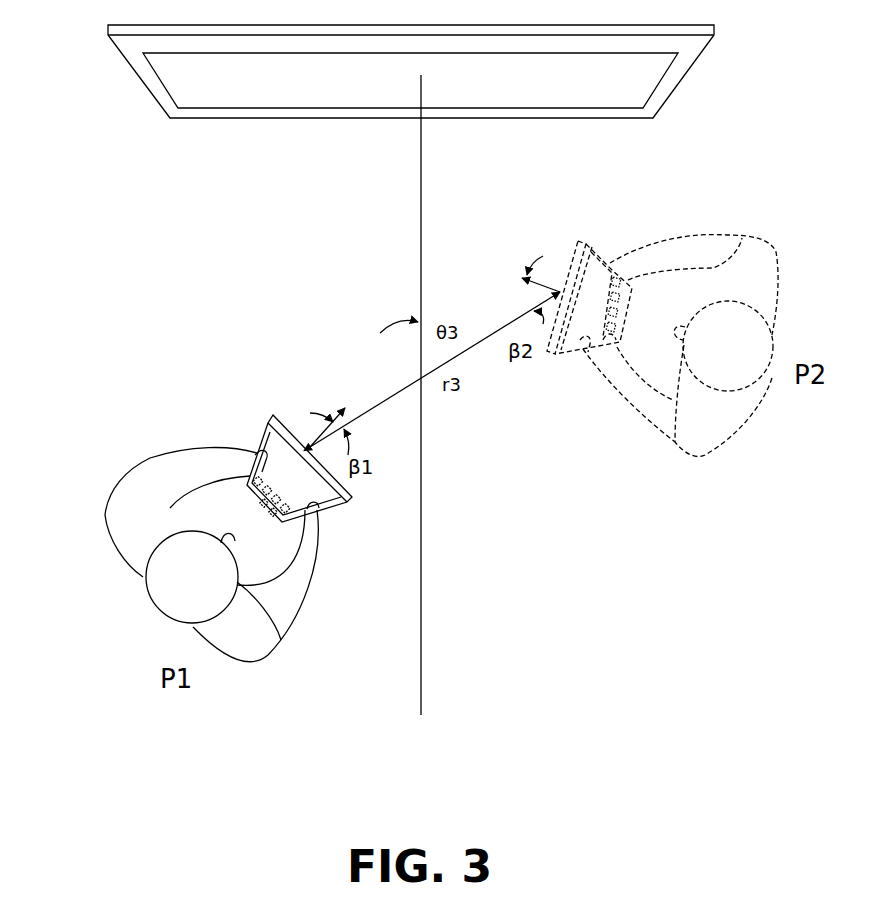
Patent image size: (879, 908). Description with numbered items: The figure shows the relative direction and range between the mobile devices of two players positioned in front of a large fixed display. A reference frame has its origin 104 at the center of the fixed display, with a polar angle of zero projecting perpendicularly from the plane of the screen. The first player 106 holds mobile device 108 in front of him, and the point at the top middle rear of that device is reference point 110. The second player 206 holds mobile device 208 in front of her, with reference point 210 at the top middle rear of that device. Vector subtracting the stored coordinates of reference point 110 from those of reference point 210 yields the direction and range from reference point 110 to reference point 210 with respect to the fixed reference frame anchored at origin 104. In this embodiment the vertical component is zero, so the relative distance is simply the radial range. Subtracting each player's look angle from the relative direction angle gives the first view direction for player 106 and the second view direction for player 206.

The origin 104 is at (421, 77).
The player 106 is at (103, 502).
The mobile device 108 is at (266, 421).
The reference point 110 is at (310, 445).
The player 206 is at (710, 458).
The mobile device 208 is at (588, 244).
The reference point 210 is at (562, 289).